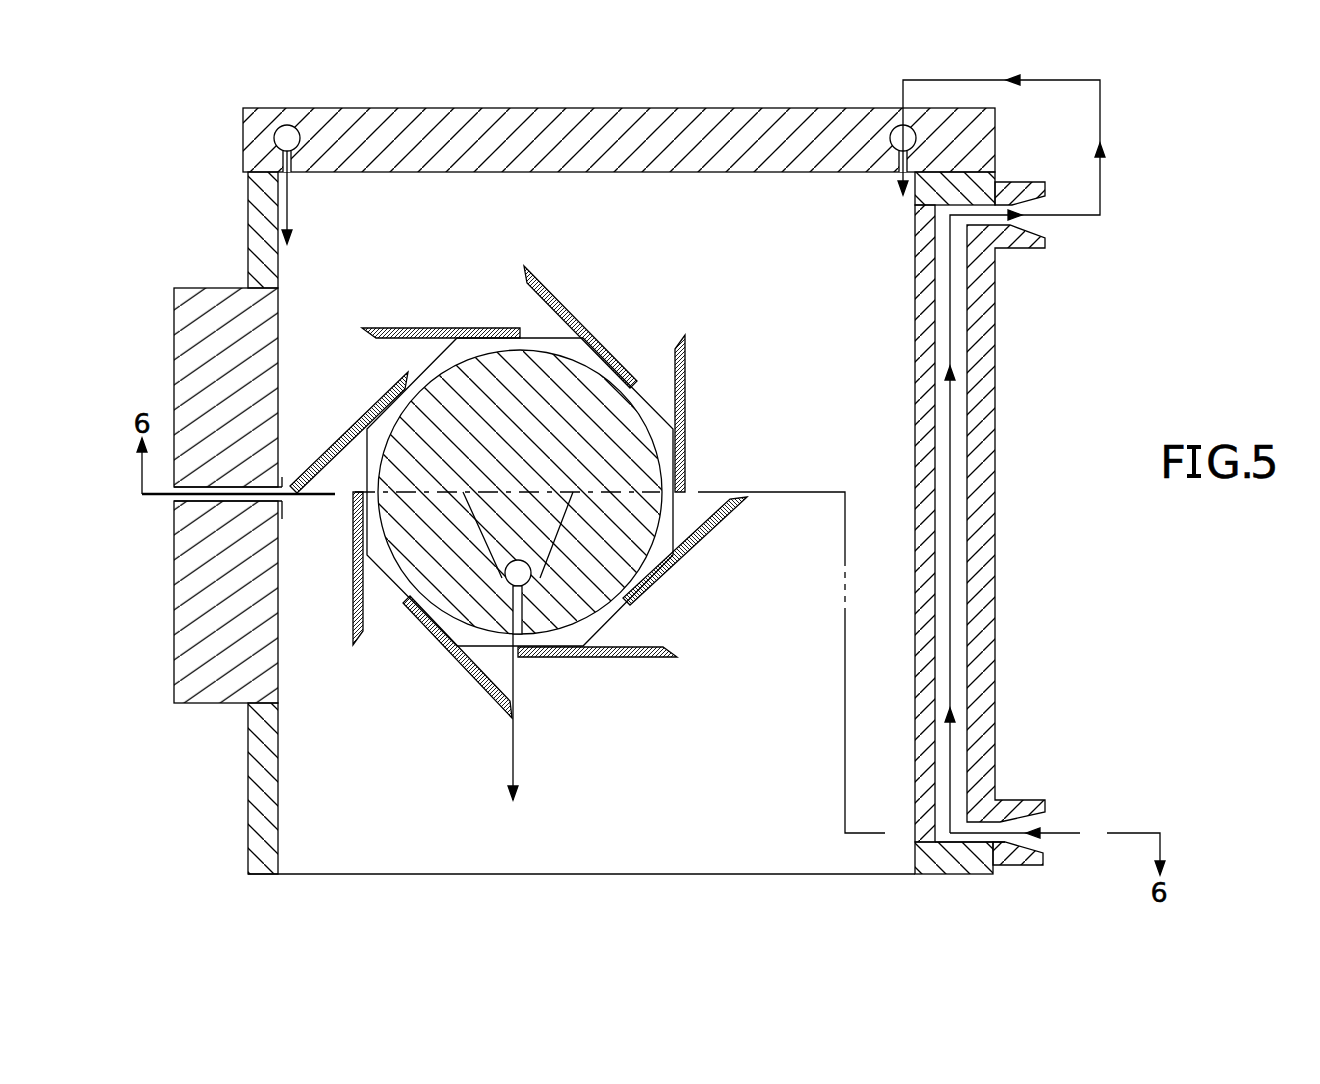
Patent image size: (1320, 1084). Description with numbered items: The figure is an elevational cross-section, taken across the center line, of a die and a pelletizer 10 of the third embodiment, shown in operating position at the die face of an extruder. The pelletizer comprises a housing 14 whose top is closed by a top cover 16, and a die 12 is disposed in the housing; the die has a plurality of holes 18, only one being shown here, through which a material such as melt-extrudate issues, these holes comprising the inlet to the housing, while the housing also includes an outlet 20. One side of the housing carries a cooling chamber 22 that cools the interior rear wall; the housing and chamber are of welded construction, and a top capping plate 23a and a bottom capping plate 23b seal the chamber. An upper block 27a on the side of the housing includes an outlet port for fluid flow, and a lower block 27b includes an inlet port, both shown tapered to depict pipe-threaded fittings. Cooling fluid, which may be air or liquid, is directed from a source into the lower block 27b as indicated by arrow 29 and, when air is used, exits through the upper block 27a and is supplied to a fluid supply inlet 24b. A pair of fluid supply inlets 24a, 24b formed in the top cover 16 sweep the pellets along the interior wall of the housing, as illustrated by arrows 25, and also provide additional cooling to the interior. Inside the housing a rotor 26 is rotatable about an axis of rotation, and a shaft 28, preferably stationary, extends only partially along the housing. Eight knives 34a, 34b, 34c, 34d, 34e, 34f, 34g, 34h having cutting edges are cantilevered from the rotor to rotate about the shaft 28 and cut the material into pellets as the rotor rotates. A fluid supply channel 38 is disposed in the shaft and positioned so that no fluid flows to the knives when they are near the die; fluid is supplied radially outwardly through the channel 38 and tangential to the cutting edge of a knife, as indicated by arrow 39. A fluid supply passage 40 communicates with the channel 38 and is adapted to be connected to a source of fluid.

The pelletizer 10 is at (1218, 127).
The die 12 is at (188, 705).
The housing 14 is at (249, 205).
The top cover 16 is at (478, 108).
The holes 18 is at (181, 499).
The outlet 20 is at (508, 875).
The cooling chamber 22 is at (962, 446).
The top capping plate 23a is at (996, 182).
The bottom capping plate 23b is at (988, 875).
The fluid supply inlet 24a is at (287, 136).
The fluid supply inlet 24b is at (900, 130).
The arrows 25 is at (289, 192).
The rotor 26 is at (545, 336).
The upper block 27a is at (1018, 250).
The lower block 27b is at (1012, 800).
The shaft 28 is at (549, 423).
The arrow 29 is at (1070, 830).
The knife 34a is at (357, 646).
The knife 34b is at (503, 710).
The knife 34c is at (605, 658).
The knife 34d is at (685, 572).
The knife 34e is at (726, 315).
The knife 34f is at (538, 280).
The knife 34g is at (415, 328).
The knife 34h is at (392, 385).
The fluid supply channel 38 is at (513, 590).
The arrow 39 is at (510, 793).
The fluid supply passage 40 is at (507, 582).